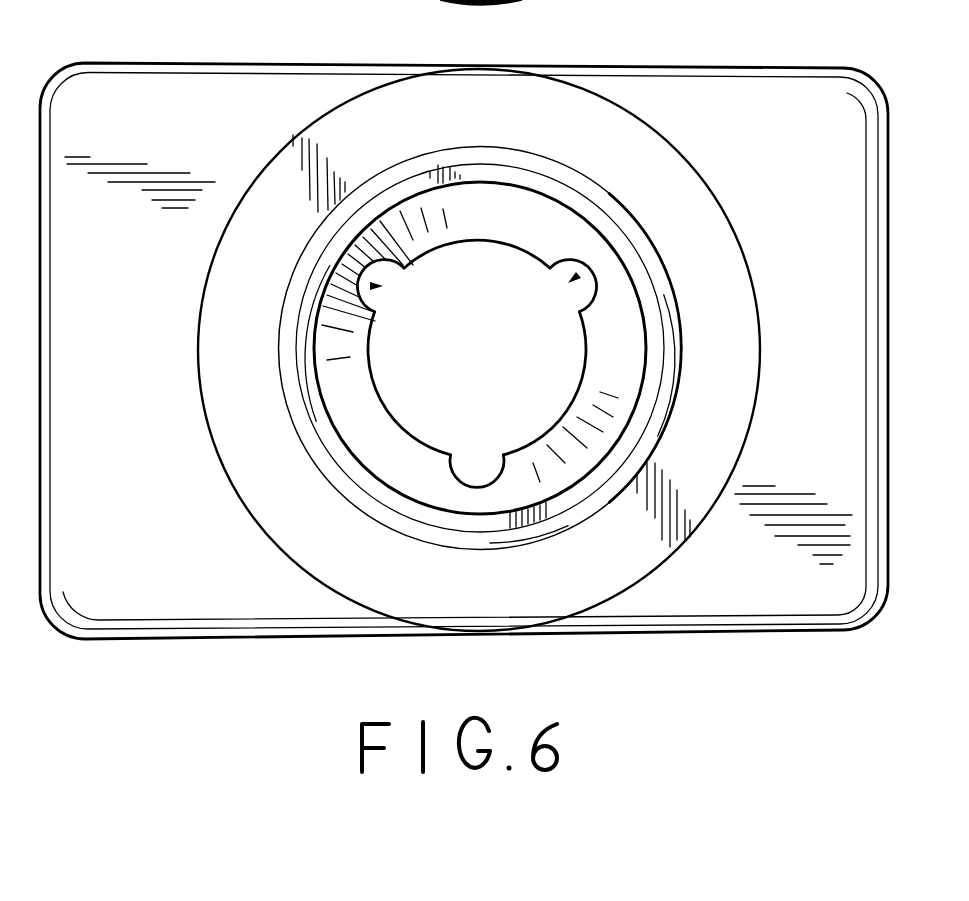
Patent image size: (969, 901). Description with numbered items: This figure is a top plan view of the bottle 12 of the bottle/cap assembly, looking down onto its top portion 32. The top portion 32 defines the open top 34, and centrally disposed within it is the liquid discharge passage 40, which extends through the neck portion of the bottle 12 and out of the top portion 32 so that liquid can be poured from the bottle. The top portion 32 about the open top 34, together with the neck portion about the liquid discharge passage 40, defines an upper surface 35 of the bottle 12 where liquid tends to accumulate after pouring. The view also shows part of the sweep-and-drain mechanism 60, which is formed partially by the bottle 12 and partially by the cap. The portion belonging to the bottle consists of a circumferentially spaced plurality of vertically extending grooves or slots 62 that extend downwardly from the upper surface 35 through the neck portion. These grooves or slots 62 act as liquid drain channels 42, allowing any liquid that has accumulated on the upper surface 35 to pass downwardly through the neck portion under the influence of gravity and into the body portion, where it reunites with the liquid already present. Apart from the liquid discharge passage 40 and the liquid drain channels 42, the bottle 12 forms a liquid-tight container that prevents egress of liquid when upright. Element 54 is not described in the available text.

The bottle 12 is at (200, 57).
The upper element 54 is at (445, 0).
The top portion 32 is at (300, 323).
The open top 34 is at (343, 397).
The upper surface 35 is at (553, 222).
The liquid discharge passage 40 is at (510, 367).
The liquid drain channels 42 is at (596, 293).
The vertically extending grooves or slots 62 is at (248, 542).
The sweep-and-drain mechanism 60 is at (378, 286).